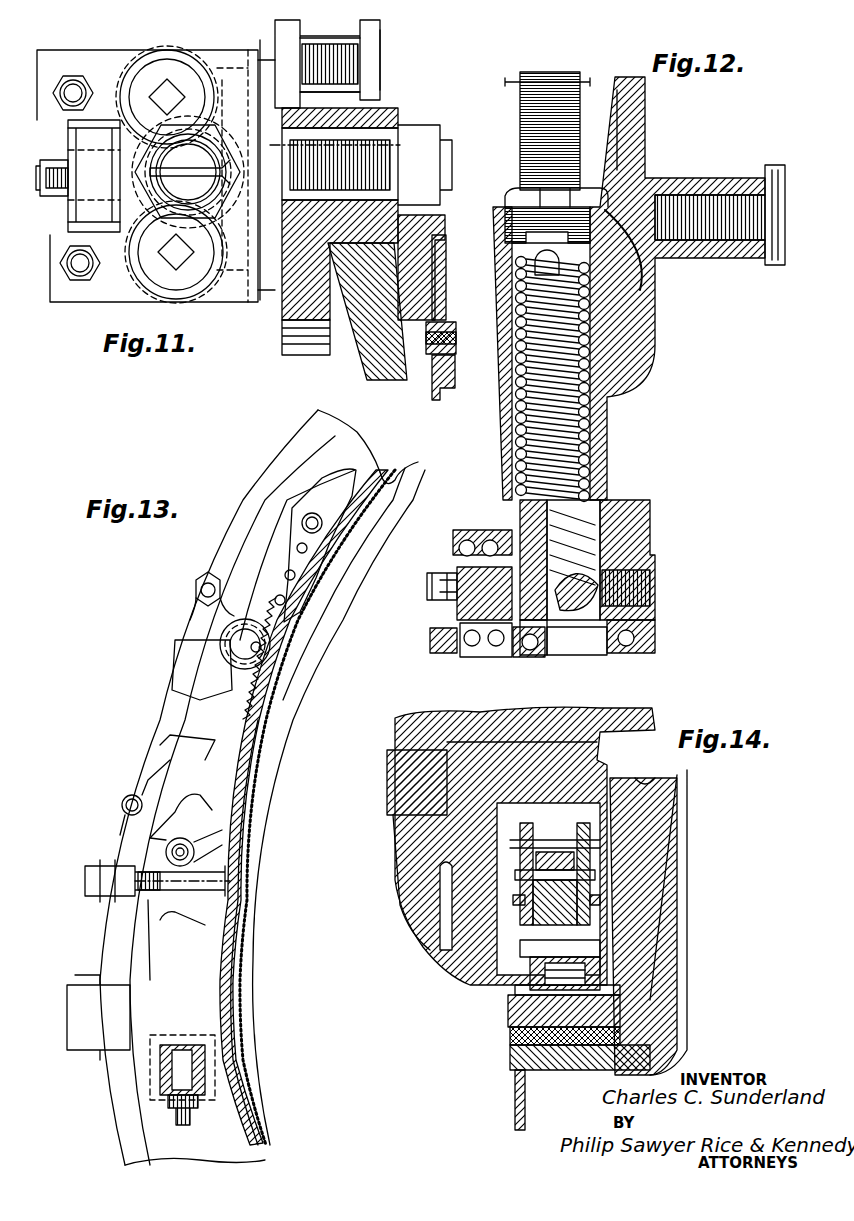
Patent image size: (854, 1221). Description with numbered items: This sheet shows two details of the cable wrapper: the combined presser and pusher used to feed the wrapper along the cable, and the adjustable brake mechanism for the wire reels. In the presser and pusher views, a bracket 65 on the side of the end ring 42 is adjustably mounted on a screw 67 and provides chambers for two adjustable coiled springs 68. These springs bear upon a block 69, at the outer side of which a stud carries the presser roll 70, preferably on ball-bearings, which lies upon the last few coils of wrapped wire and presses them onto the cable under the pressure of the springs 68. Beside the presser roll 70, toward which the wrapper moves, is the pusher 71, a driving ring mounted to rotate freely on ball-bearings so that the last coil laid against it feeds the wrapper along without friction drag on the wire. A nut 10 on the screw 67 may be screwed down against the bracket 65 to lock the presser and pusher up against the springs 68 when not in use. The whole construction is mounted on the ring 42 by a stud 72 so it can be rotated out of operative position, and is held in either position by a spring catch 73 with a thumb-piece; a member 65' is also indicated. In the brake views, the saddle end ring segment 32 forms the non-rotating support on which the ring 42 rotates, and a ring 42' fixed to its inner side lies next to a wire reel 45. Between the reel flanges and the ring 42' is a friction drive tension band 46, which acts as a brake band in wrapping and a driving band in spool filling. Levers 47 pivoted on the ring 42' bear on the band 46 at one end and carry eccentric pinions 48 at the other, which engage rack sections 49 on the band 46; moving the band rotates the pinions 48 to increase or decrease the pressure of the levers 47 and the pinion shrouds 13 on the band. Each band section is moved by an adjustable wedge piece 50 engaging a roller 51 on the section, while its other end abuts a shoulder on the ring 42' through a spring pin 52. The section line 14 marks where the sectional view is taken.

In FIG. 11, the nut 10 is at (205, 212).
In FIG. 12, the nut 10 is at (515, 196).
In FIG. 13, the pinion shroud 13 is at (254, 640).
In FIG. 14, the pinion shroud 13 is at (583, 828).
In FIG. 13, the section line 14 is at (190, 622).
In FIG. 11, the end ring segment 32 is at (382, 350).
In FIG. 14, the end ring segment 32 is at (410, 925).
In FIG. 11, the end ring 42 is at (338, 231).
In FIG. 14, the end ring 42 is at (387, 782).
In FIG. 11, the ring 42' is at (445, 246).
In FIG. 13, the ring 42' is at (197, 644).
In FIG. 14, the ring 42' is at (567, 846).
In FIG. 11, the wire reel 45 is at (450, 372).
In FIG. 13, the wire reel 45 is at (233, 948).
In FIG. 14, the wire reel 45 is at (640, 935).
In FIG. 11, the friction drive tension band 46 is at (460, 336).
In FIG. 13, the friction drive tension band 46 is at (312, 598).
In FIG. 14, the friction drive tension band 46 is at (535, 1010).
In FIG. 11, the lever 47 is at (446, 270).
In FIG. 13, the lever 47 is at (344, 500).
In FIG. 14, the lever 47 is at (600, 945).
In FIG. 13, the eccentric pinion 48 is at (236, 660).
In FIG. 14, the eccentric pinion 48 is at (565, 905).
In FIG. 13, the rack section 49 is at (245, 700).
In FIG. 14, the rack section 49 is at (595, 989).
In FIG. 13, the adjustable wedge piece 50 is at (216, 878).
In FIG. 13, the roller 51 is at (180, 838).
In FIG. 13, the spring pin 52 is at (175, 1040).
In FIG. 11, the bracket 65 is at (300, 154).
In FIG. 12, the bracket 65' is at (661, 134).
In FIG. 12, the screw 67 is at (522, 128).
In FIG. 11, the coiled spring 68 is at (150, 78).
In FIG. 12, the coiled spring 68 is at (575, 420).
In FIG. 12, the block 69 is at (646, 560).
In FIG. 11, the presser roll 70 is at (80, 135).
In FIG. 12, the presser roll 70 is at (488, 532).
In FIG. 12, the pusher 71 is at (518, 652).
In FIG. 12, the stud 72 is at (712, 196).
In FIG. 11, the spring catch 73 is at (382, 66).